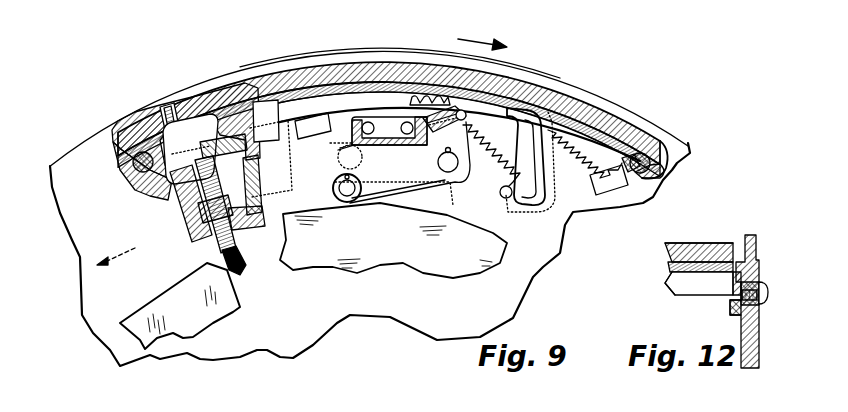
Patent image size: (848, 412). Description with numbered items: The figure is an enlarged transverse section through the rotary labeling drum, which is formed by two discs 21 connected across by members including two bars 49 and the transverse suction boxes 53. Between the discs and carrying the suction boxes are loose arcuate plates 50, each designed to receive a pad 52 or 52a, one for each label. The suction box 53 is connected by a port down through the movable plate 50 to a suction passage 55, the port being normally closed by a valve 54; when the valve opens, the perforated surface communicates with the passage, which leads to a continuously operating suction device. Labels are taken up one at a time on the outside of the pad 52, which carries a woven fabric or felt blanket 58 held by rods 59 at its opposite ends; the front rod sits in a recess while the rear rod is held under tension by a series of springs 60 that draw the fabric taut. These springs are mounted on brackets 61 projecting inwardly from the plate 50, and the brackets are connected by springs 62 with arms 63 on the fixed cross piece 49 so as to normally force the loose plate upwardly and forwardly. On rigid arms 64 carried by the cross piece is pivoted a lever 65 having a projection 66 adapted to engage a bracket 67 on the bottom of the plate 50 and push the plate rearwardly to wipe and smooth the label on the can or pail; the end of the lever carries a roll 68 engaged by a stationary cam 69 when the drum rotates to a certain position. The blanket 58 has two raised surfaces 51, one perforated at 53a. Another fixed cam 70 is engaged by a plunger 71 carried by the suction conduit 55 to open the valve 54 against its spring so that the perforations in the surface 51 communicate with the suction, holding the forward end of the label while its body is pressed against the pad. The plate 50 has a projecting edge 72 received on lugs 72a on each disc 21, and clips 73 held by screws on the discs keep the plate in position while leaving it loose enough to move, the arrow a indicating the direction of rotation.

In FIG. 9, the disc 21 is at (370, 254).
In FIG. 12, the disc 21 is at (760, 322).
In FIG. 9, the bar 49 is at (340, 156).
In FIG. 9, the loose plate 50 is at (583, 108).
In FIG. 12, the loose plate 50 is at (670, 290).
In FIG. 9, the raised surface 51 is at (188, 97).
In FIG. 9, the pad 52 is at (347, 66).
In FIG. 12, the pad 52a is at (690, 244).
In FIG. 9, the suction box 53 is at (258, 142).
In FIG. 9, the perforation 53a is at (164, 110).
In FIG. 9, the valve 54 is at (185, 205).
In FIG. 9, the suction passage 55 is at (240, 190).
In FIG. 9, the blanket 58 is at (386, 64).
In FIG. 12, the blanket 58 is at (710, 250).
In FIG. 9, the rod 59 is at (138, 190).
In FIG. 9, the spring 60 is at (594, 155).
In FIG. 9, the bracket 61 is at (540, 172).
In FIG. 9, the spring 62 is at (496, 168).
In FIG. 9, the arm 63 is at (468, 170).
In FIG. 9, the rigid arm 64 is at (437, 160).
In FIG. 9, the lever 65 is at (405, 194).
In FIG. 9, the projection 66 is at (410, 104).
In FIG. 9, the bracket 67 is at (468, 116).
In FIG. 9, the roll 68 is at (333, 189).
In FIG. 9, the stationary cam 69 is at (393, 239).
In FIG. 9, the cam 70 is at (180, 306).
In FIG. 9, the plunger 71 is at (244, 266).
In FIG. 9, the projecting edge 72 is at (274, 90).
In FIG. 12, the projecting edge 72 is at (728, 292).
In FIG. 9, the lug 72a is at (606, 185).
In FIG. 12, the lug 72a is at (721, 313).
In FIG. 12, the clip 73 is at (759, 283).
In FIG. 9, the direction of rotation a is at (482, 36).